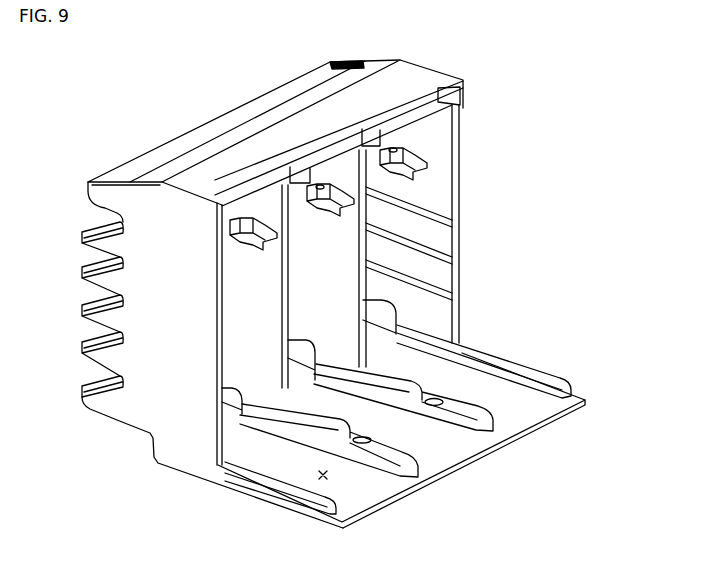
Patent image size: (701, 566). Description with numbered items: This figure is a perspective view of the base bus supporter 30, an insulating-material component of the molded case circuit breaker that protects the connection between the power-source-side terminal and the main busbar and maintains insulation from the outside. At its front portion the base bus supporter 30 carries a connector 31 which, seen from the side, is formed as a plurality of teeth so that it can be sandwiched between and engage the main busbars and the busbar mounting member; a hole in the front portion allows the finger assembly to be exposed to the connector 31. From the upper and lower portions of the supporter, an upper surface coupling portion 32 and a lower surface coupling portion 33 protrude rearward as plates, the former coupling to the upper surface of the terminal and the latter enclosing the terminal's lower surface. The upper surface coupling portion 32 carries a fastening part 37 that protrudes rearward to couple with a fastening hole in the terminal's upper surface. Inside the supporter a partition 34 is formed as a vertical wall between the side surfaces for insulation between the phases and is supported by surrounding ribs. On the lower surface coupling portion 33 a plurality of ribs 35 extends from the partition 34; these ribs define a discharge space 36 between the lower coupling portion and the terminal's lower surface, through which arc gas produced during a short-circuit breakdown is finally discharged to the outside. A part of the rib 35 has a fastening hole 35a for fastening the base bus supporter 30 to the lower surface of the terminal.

The base bus supporter 30 is at (580, 104).
The connector 31 is at (68, 188).
The upper surface coupling portion 32 is at (433, 118).
The lower surface coupling portion 33 is at (547, 374).
The partition 34 is at (350, 252).
The rib 35 is at (424, 461).
The fastening hole 35a is at (447, 398).
The discharge space 36 is at (328, 477).
The fastening part 37 is at (413, 151).